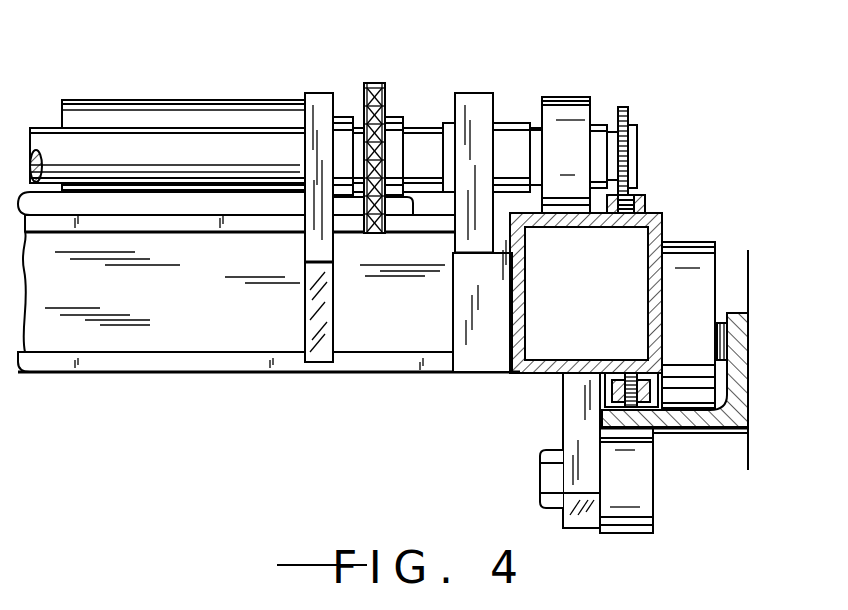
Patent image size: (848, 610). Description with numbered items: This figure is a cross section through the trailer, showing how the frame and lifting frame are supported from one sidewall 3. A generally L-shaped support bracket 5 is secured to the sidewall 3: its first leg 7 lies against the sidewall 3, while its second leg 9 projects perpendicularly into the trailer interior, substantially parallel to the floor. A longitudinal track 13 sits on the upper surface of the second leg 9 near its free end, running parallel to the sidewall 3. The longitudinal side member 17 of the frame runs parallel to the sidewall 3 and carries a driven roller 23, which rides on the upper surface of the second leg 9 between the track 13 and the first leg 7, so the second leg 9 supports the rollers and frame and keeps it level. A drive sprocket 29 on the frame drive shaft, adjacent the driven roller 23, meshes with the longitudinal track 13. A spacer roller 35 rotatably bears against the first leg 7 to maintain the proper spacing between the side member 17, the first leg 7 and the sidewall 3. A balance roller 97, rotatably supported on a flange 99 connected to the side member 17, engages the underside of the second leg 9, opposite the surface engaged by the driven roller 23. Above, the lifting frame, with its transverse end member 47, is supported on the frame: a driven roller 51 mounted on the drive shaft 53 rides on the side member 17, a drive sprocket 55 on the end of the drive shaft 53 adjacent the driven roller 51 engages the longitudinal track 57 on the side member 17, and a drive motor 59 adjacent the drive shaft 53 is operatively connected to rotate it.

The sidewall 3 is at (752, 278).
The support bracket 5 is at (730, 433).
The first leg 7 is at (745, 357).
The second leg 9 is at (667, 428).
The longitudinal track 13 is at (612, 392).
The longitudinal side member 17 is at (535, 373).
The driven roller 23 is at (690, 240).
The drive sprocket 29 is at (630, 372).
The spacer roller 35 is at (724, 322).
The transverse end member 47 is at (180, 303).
The driven roller 51 is at (565, 97).
The drive shaft 53 is at (200, 128).
The drive sprocket 55 is at (625, 107).
The longitudinal track 57 is at (645, 192).
The drive motor 59 is at (85, 100).
The balance roller 97 is at (628, 533).
The flange 99 is at (560, 420).